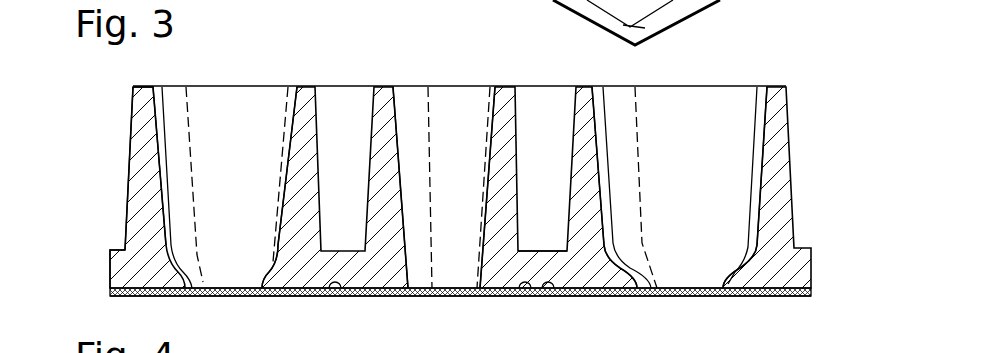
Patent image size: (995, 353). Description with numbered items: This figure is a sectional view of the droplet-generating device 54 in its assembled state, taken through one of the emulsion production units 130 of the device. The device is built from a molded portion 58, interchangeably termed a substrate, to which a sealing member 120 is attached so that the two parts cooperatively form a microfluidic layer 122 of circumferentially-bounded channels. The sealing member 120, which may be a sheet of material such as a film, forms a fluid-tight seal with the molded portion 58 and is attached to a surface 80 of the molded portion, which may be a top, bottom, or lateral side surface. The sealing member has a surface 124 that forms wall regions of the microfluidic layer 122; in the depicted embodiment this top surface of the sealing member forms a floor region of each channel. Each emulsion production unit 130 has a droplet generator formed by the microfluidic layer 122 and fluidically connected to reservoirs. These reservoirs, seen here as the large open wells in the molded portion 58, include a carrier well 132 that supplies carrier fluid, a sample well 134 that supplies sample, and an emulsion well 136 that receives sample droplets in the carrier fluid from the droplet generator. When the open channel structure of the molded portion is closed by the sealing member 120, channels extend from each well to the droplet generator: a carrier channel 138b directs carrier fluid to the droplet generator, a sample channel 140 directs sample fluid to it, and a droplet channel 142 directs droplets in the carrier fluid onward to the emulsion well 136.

The droplet-generating device 54 is at (90, 83).
The emulsion production unit 130 is at (117, 148).
The molded portion 58 is at (108, 275).
The sealing member 120 is at (110, 292).
The surface 80 is at (752, 297).
The carrier well 132 is at (297, 110).
The sample well 134 is at (493, 110).
The emulsion well 136 is at (766, 110).
The surface 124 is at (773, 287).
The microfluidic layer 122 is at (500, 265).
The sample channel 140 is at (336, 283).
The carrier channel 138b is at (527, 284).
The droplet channel 142 is at (550, 285).